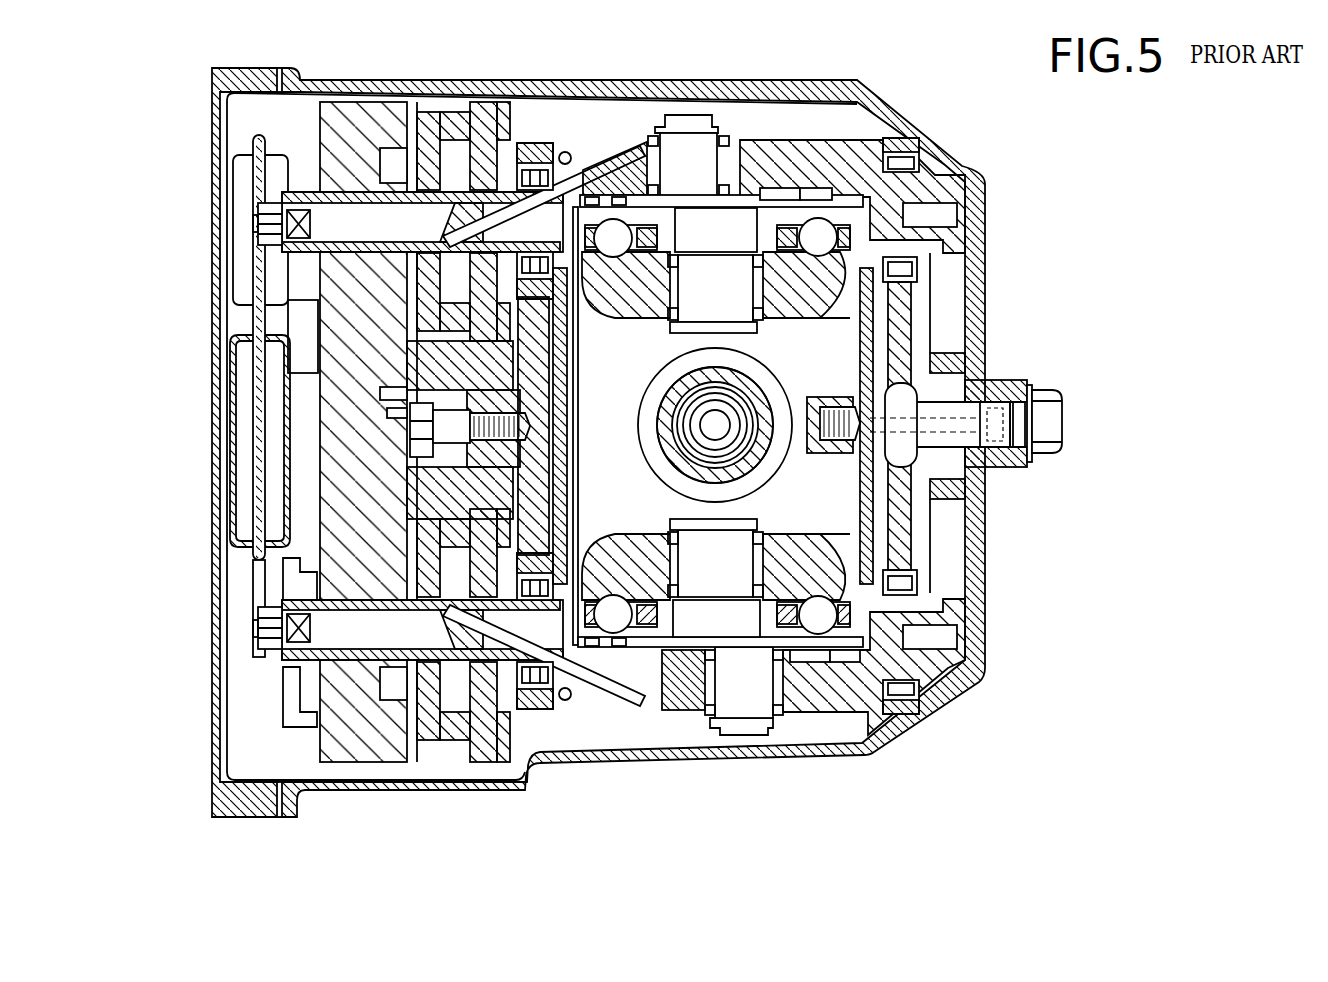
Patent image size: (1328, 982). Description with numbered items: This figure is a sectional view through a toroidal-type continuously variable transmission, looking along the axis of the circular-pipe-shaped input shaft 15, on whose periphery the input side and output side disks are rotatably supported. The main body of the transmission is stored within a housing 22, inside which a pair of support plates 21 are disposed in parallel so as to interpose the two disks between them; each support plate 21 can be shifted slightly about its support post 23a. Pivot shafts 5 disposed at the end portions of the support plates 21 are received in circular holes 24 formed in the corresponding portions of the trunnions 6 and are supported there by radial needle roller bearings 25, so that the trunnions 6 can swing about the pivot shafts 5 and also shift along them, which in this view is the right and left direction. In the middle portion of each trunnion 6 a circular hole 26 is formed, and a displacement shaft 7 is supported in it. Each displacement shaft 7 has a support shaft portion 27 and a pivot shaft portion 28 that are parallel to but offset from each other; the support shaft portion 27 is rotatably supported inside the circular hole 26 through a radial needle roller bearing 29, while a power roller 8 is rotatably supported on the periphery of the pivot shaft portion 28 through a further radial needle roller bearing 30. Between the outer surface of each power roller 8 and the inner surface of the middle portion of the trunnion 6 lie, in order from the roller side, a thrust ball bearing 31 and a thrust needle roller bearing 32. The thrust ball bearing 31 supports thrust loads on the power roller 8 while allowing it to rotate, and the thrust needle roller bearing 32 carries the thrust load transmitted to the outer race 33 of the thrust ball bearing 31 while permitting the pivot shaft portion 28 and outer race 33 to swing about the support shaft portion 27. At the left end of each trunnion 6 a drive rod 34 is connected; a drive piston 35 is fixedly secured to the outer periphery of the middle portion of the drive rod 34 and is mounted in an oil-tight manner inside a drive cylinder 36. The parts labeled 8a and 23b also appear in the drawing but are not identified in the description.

The pivot shaft 5 is at (533, 187).
The trunnion 6 is at (870, 150).
The displacement shaft 7 is at (743, 215).
The power roller 8 is at (830, 300).
The hub 8a is at (817, 335).
The input shaft 15 is at (672, 422).
The support plate 21 is at (540, 492).
The housing 22 is at (590, 90).
The support post 23a is at (565, 452).
The bolt 23b is at (913, 393).
The circular hole 24 is at (533, 143).
The radial needle roller bearing 25 is at (560, 178).
The circular hole 26 is at (662, 135).
The support shaft portion 27 is at (690, 150).
The pivot shaft portion 28 is at (690, 318).
The radial needle roller bearing 29 is at (707, 162).
The radial needle roller bearing 30 is at (690, 283).
The thrust ball bearing 31 is at (800, 237).
The thrust needle roller bearing 32 is at (800, 192).
The outer race 33 is at (830, 192).
The drive rod 34 is at (357, 207).
The drive piston 35 is at (448, 120).
The drive cylinder 36 is at (403, 115).